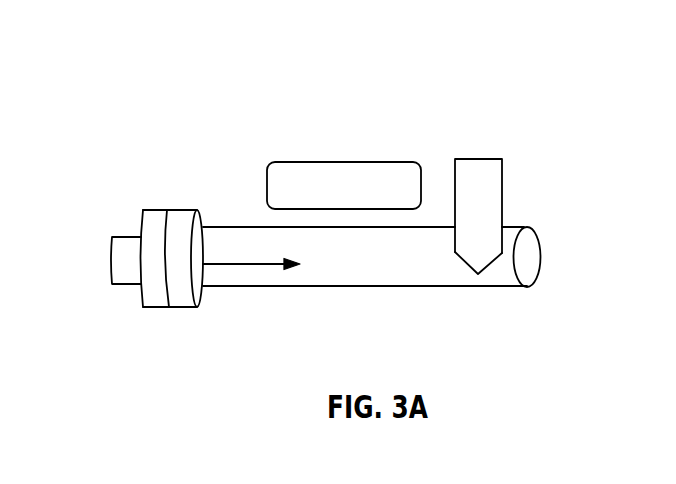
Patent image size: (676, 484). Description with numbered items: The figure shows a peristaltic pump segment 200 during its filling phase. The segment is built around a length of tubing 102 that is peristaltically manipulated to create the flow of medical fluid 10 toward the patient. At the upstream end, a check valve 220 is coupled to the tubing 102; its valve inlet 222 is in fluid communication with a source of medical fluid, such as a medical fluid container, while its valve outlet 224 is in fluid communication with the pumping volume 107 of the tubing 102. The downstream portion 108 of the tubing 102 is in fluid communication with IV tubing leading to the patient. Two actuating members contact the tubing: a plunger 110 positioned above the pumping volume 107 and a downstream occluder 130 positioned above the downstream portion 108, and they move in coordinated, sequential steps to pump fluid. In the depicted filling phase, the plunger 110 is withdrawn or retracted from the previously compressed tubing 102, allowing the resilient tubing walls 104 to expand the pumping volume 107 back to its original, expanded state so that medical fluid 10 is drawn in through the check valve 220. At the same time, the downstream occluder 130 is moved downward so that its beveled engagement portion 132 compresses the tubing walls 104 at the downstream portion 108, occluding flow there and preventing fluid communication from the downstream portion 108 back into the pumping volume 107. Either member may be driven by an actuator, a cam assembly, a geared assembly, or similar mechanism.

The peristaltic pump segment 200 is at (350, 47).
The valve inlet 222 is at (109, 260).
The check valve 220 is at (155, 215).
The valve outlet 224 is at (183, 212).
The medical fluid 10 is at (220, 260).
The tubing 102 is at (260, 278).
The pumping volume 107 is at (438, 288).
The downstream portion 108 is at (525, 227).
The tubing walls 104 is at (527, 262).
The downstream occluder 130 is at (477, 168).
The beveled engagement portion 132 is at (490, 265).
The plunger 110 is at (343, 173).